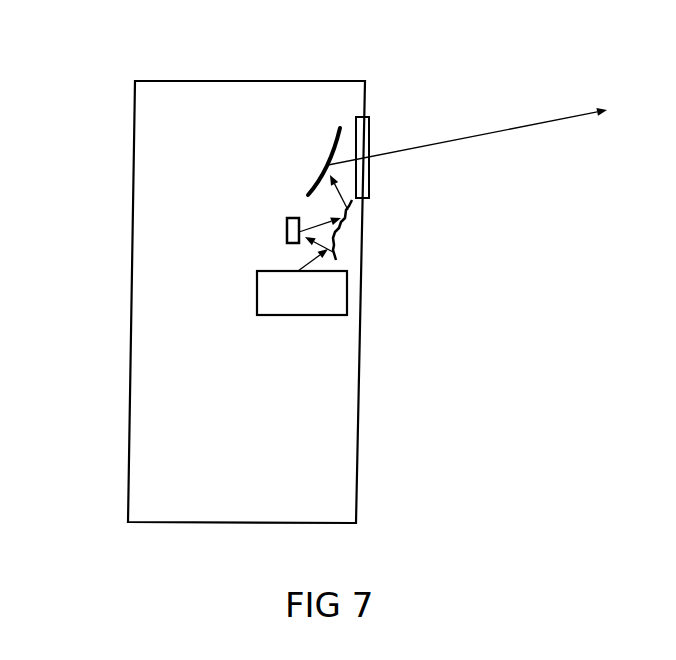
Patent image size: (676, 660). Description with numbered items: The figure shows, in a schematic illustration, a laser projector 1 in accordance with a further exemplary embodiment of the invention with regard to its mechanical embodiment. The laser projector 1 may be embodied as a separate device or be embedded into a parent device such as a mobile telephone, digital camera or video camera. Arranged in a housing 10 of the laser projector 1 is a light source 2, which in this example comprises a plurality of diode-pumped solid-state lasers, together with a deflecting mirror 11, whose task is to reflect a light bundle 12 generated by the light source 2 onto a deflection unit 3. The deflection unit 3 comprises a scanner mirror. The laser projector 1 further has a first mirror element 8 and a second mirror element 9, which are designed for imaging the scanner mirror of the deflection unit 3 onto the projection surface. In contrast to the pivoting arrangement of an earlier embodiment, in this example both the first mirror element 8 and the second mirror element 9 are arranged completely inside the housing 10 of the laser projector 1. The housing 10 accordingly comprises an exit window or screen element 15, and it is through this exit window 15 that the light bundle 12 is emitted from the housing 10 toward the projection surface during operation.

The laser projector 1 is at (136, 57).
The light source 2 is at (283, 297).
The deflection unit 3 is at (287, 222).
The first mirror element 8 is at (346, 218).
The second mirror element 9 is at (332, 143).
The housing 10 is at (134, 192).
The deflecting mirror 11 is at (336, 253).
The light bundle 12 is at (480, 133).
The exit window or screen element 15 is at (369, 180).